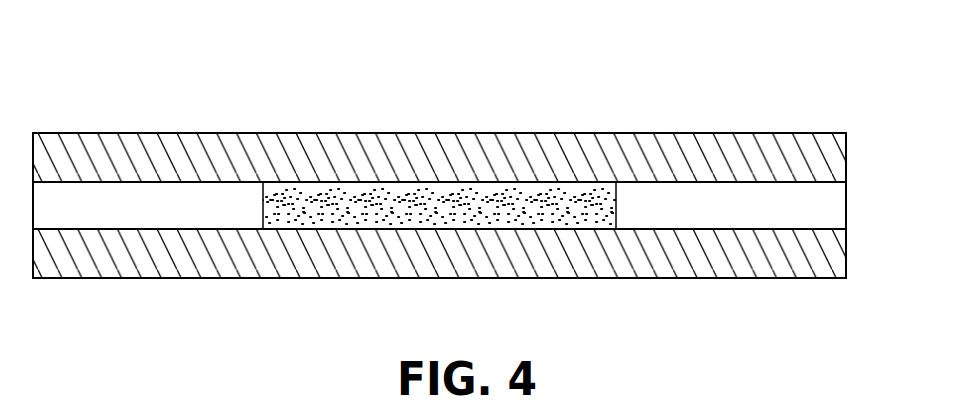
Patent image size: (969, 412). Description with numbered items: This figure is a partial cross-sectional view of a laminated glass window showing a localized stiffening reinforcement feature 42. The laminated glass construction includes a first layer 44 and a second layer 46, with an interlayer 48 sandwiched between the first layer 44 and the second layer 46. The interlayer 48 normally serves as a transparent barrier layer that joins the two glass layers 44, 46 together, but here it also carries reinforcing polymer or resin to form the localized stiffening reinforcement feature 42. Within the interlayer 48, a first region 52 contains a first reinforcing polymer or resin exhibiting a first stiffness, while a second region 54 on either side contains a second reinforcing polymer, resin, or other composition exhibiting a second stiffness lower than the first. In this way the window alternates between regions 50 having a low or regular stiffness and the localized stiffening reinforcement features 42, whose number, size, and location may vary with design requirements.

The localized stiffening reinforcement feature 42 is at (459, 122).
The first layer 44 is at (853, 158).
The second layer 46 is at (853, 253).
The interlayer 48 is at (853, 209).
The regions having a low stiffness 50 is at (150, 123).
The first region 52 is at (318, 210).
The second region 54 is at (145, 215).